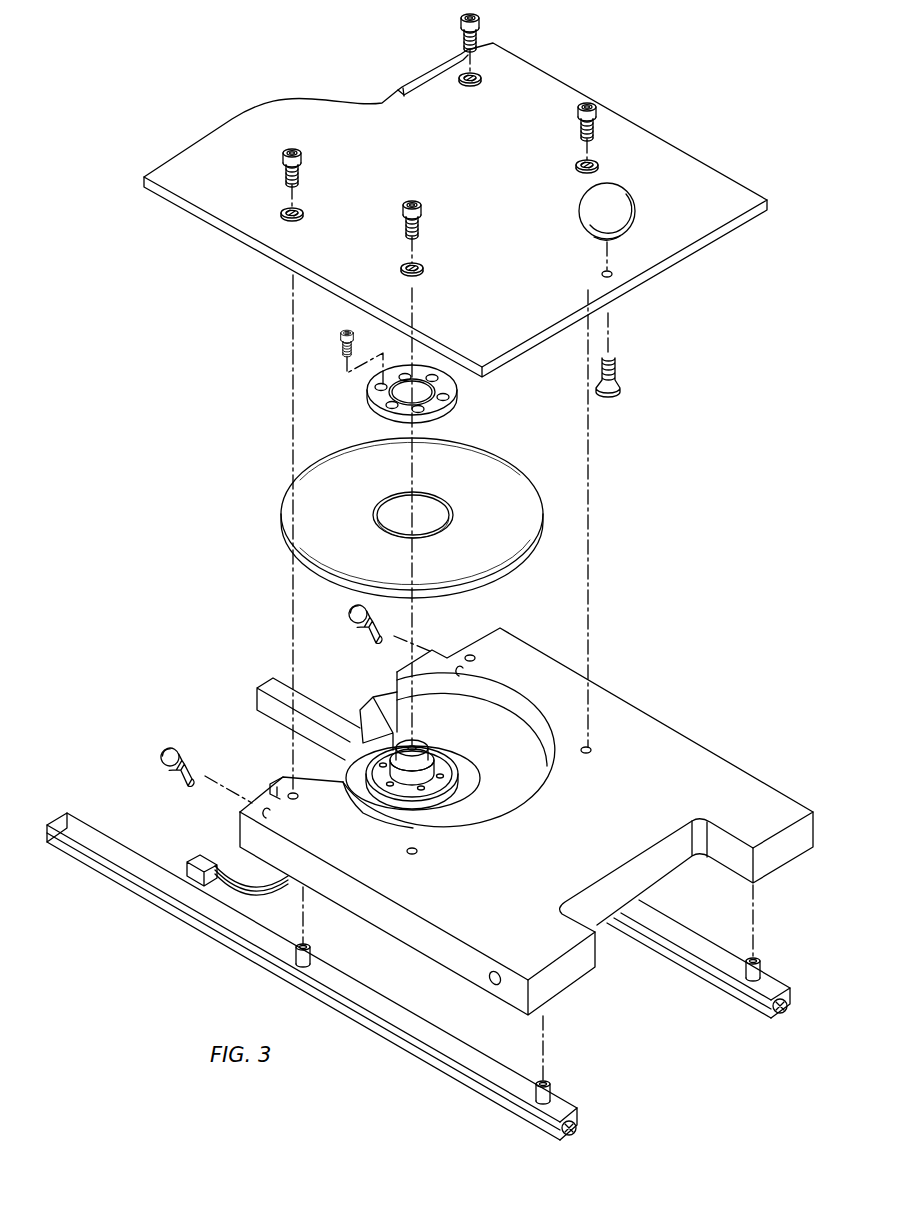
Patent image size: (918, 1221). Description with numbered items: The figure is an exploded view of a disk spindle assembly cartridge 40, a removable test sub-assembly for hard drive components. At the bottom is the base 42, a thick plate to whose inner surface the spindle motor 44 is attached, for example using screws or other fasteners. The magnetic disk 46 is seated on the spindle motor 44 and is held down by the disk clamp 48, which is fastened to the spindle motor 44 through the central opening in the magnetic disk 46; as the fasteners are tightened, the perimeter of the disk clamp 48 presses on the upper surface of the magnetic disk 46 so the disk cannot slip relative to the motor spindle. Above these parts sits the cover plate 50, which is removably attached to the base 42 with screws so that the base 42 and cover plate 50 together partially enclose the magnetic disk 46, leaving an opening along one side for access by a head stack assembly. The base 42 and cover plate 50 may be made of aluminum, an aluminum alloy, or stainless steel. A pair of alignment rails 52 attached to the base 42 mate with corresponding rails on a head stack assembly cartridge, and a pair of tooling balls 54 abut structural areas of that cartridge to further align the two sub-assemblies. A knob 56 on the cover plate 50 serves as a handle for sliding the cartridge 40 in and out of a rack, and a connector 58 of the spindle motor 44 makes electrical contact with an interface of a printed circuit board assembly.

The disk spindle assembly cartridge 40 is at (767, 47).
The base 42 is at (655, 740).
The spindle motor 44 is at (440, 763).
The magnetic disk 46 is at (300, 508).
The disk clamp 48 is at (458, 398).
The cover plate 50 is at (640, 143).
The alignment rails 52 is at (733, 988).
The tooling balls 54 is at (355, 622).
The knob 56 is at (585, 201).
The connector 58 is at (200, 857).